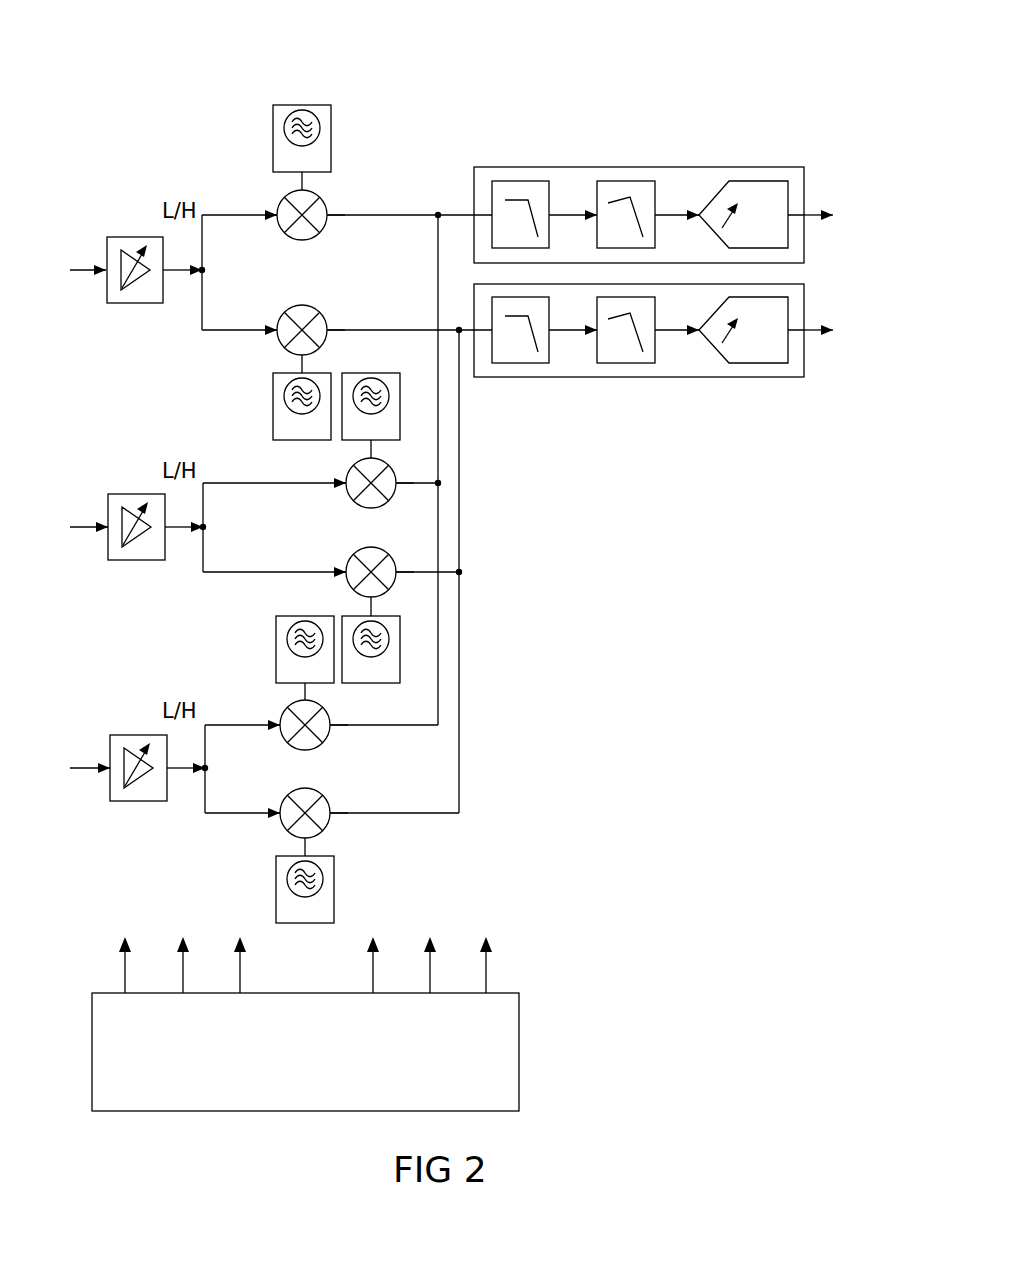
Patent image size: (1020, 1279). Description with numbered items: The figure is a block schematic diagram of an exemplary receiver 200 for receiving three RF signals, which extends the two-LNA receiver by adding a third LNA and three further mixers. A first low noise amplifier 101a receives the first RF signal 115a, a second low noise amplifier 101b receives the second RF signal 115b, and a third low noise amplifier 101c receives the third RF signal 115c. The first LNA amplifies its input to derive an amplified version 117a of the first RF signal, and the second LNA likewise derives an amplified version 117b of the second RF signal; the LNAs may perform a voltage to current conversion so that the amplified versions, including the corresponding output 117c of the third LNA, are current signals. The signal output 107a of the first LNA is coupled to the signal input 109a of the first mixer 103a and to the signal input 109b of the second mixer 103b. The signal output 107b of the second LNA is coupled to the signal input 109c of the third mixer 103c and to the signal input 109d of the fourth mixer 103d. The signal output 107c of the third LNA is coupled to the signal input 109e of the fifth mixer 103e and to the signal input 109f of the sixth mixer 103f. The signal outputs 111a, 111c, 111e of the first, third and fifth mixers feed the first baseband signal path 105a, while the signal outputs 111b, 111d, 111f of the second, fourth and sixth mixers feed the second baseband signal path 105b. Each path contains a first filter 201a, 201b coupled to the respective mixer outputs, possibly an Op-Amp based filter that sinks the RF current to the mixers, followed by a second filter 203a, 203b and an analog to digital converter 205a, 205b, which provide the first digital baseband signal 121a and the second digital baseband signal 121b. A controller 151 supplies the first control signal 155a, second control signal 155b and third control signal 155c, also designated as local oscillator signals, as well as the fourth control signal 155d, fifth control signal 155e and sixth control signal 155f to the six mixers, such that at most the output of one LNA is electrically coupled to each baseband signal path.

The receiver 200 is at (778, 82).
The first RF signal 115a is at (75, 262).
The second RF signal 115b is at (75, 520).
The third RF signal 115c is at (75, 762).
The first low noise amplifier 101a is at (132, 237).
The second low noise amplifier 101b is at (133, 494).
The third low noise amplifier 101c is at (134, 735).
The signal output of the first LNA 107a is at (170, 280).
The signal output of the second LNA 107b is at (172, 537).
The signal output of the third LNA 107c is at (174, 778).
The amplified version of the first RF signal 117a is at (183, 275).
The amplified version of the second RF signal 117b is at (184, 533).
The third splitting node 117c is at (186, 774).
The first control signal 155a is at (300, 185).
The second control signal 155b is at (300, 370).
The third control signal 155c is at (368, 453).
The fourth control signal 155d is at (368, 607).
The fifth control signal 155e is at (302, 694).
The sixth control signal 155f is at (302, 850).
The first mixer 103a is at (320, 199).
The second mixer 103b is at (326, 343).
The third mixer 103c is at (422, 461).
The fourth mixer 103d is at (392, 580).
The fifth mixer 103e is at (322, 704).
The sixth mixer 103f is at (328, 826).
The signal input of the first mixer 109a is at (285, 231).
The signal input of the second mixer 109b is at (285, 316).
The signal input of the third mixer 109c is at (354, 499).
The signal input of the fourth mixer 109d is at (354, 556).
The signal input of the fifth mixer 109e is at (288, 741).
The signal input of the sixth mixer 109f is at (288, 799).
The signal output of the first mixer 111a is at (320, 231).
The signal output of the second mixer 111b is at (355, 307).
The signal output of the third mixer 111c is at (418, 505).
The signal output of the fourth mixer 111d is at (418, 560).
The signal output of the fifth mixer 111e is at (352, 752).
The signal output of the sixth mixer 111f is at (352, 797).
The first baseband signal path 105a is at (690, 167).
The second baseband signal path 105b is at (695, 377).
The first filter of the first baseband signal path 201a is at (515, 181).
The first filter of the second baseband signal path 201b is at (518, 363).
The second filter of the first baseband signal path 203a is at (620, 181).
The second filter of the second baseband signal path 203b is at (623, 363).
The analog to digital converter of the first baseband signal path 205a is at (745, 181).
The analog to digital converter of the second baseband signal path 205b is at (748, 363).
The first digital baseband signal 121a is at (808, 210).
The second digital baseband signal 121b is at (812, 337).
The controller 151 is at (519, 1052).